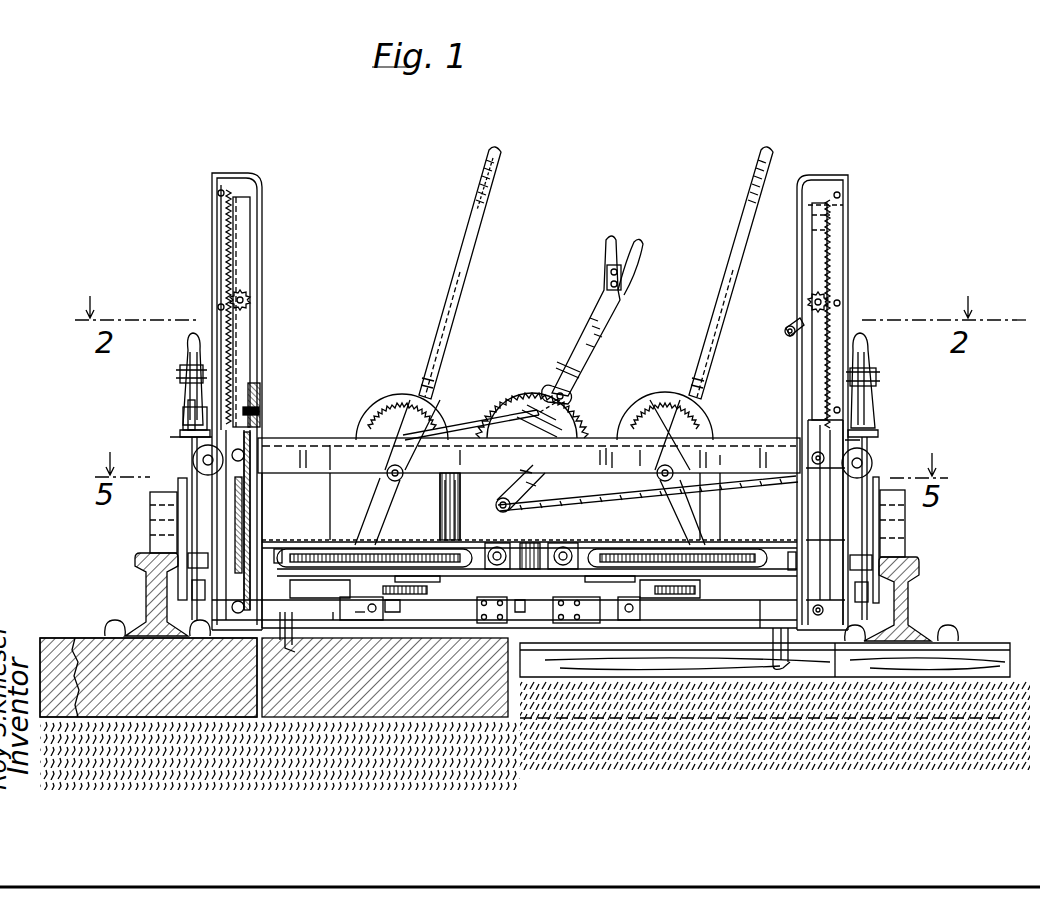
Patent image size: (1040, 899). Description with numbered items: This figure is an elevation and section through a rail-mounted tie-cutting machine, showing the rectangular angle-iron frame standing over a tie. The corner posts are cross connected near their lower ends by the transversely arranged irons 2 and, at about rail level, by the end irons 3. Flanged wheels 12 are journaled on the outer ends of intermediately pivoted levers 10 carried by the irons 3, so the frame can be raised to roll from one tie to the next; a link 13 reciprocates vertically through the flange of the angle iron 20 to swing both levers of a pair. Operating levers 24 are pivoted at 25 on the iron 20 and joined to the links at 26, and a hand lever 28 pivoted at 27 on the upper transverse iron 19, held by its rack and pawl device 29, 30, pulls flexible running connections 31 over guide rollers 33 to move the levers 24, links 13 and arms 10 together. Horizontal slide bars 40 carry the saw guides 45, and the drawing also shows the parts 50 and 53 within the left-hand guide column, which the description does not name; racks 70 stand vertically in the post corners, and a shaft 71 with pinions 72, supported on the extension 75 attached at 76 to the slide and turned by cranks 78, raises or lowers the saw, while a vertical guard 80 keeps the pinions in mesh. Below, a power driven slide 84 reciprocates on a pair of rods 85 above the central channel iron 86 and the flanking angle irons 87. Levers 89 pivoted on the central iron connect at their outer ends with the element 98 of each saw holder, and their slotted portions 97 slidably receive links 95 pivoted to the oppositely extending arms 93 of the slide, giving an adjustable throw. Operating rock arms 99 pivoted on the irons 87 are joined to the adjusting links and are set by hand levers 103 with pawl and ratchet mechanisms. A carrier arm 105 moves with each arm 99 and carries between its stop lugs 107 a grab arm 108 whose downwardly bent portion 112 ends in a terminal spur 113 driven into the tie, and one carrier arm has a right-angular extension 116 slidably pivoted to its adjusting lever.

The transversely arranged iron 2 is at (745, 632).
The end iron 3 is at (205, 548).
The intermediately pivoted lever 10 is at (183, 584).
The flanged wheel 12 is at (160, 505).
The link 13 is at (190, 445).
The upper transverse iron 19 is at (322, 438).
The angle iron 20 is at (185, 436).
The operating lever 24 is at (192, 335).
The pivot 25 is at (180, 375).
The pivotal connection 26 is at (186, 417).
The pivot 27 is at (520, 469).
The hand lever 28 is at (600, 331).
The rack 29 is at (513, 396).
The pawl 30 is at (575, 389).
The flexible running connection 31 is at (470, 430).
The guide roller 33 is at (195, 460).
The slide bar 40 is at (241, 447).
The saw guide 45 is at (243, 530).
The block 50 is at (262, 392).
The guide strip 53 is at (262, 492).
The rack 70 is at (228, 252).
The shaft 71 is at (250, 298).
The pinion 72 is at (243, 292).
The extension 75 is at (250, 346).
The attachment point 76 is at (260, 411).
The crank 78 is at (785, 326).
The guard 80 is at (263, 205).
The power driven slide 84 is at (532, 548).
The rod 85 is at (500, 548).
The channel iron 86 is at (520, 613).
The angle iron 87 is at (395, 613).
The lever 89 is at (402, 545).
The arm 93 is at (435, 572).
The link 95 is at (420, 553).
The horizontal slot 97 is at (344, 548).
The element 98 is at (278, 558).
The operating rock arm 99 is at (365, 575).
The hand lever 103 is at (453, 303).
The carrier arm 105 is at (360, 616).
The stop lug 107 is at (290, 628).
The grab arm 108 is at (333, 620).
The bent portion 112 is at (280, 642).
The terminal spur 113 is at (795, 662).
The right-angular extension 116 is at (410, 594).